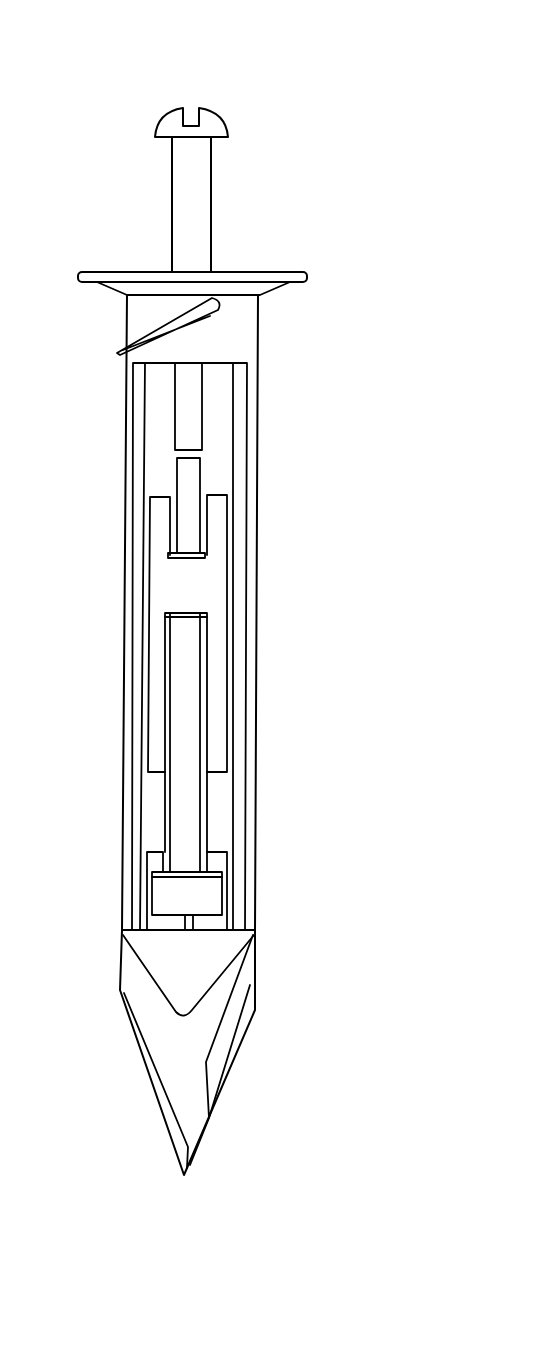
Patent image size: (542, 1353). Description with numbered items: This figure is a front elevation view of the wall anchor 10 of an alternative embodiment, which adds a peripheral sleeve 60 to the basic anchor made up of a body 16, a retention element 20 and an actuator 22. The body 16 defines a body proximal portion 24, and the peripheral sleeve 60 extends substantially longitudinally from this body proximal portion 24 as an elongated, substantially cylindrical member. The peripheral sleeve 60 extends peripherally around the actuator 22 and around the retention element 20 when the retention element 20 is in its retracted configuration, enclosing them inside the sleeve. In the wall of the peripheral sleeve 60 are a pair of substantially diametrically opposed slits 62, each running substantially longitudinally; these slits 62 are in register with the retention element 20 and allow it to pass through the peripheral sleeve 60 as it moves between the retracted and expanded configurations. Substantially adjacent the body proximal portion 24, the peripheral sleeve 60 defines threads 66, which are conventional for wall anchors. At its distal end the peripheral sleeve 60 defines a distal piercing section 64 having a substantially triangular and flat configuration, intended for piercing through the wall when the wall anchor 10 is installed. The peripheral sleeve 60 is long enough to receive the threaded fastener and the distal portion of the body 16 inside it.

The wall anchor 10 is at (352, 104).
The actuator 22 is at (232, 240).
The body 16 is at (151, 246).
The body proximal portion 24 is at (95, 285).
The peripheral sleeve 60 is at (257, 355).
The slits 62 is at (146, 464).
The threads 66 is at (210, 312).
The retention element 20 is at (228, 598).
The distal piercing section 64 is at (148, 1030).